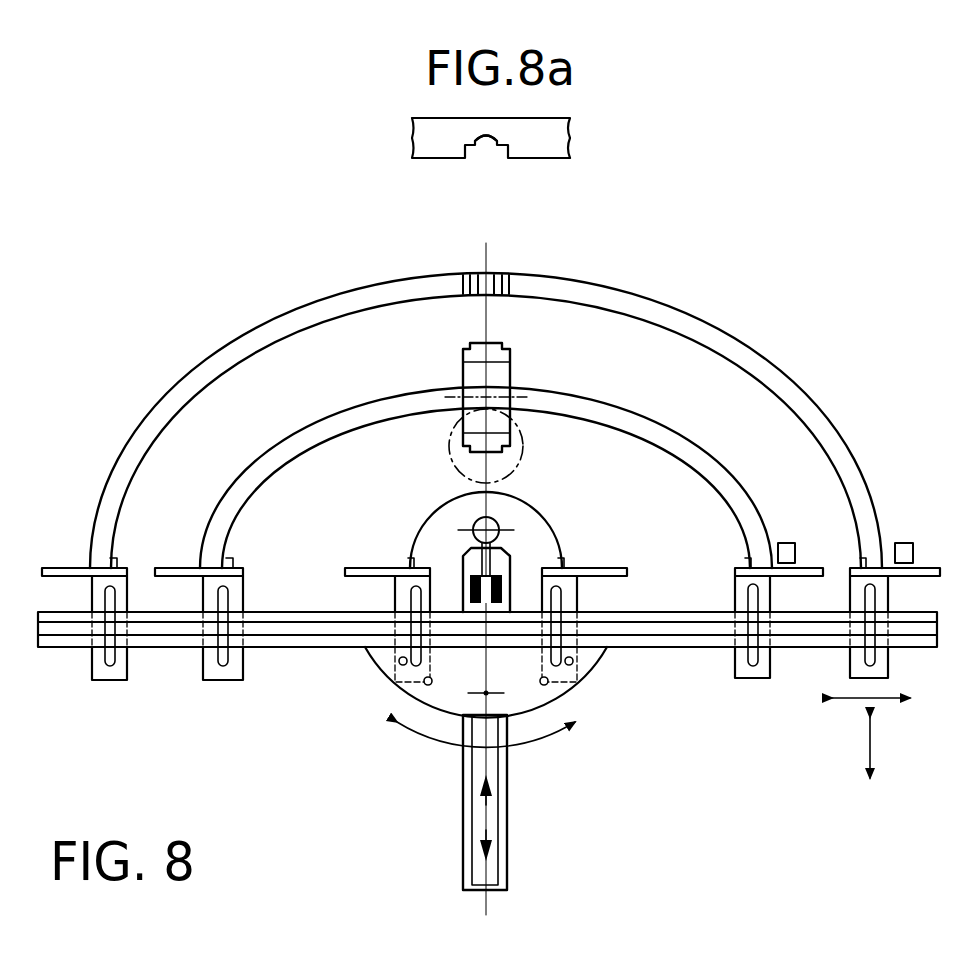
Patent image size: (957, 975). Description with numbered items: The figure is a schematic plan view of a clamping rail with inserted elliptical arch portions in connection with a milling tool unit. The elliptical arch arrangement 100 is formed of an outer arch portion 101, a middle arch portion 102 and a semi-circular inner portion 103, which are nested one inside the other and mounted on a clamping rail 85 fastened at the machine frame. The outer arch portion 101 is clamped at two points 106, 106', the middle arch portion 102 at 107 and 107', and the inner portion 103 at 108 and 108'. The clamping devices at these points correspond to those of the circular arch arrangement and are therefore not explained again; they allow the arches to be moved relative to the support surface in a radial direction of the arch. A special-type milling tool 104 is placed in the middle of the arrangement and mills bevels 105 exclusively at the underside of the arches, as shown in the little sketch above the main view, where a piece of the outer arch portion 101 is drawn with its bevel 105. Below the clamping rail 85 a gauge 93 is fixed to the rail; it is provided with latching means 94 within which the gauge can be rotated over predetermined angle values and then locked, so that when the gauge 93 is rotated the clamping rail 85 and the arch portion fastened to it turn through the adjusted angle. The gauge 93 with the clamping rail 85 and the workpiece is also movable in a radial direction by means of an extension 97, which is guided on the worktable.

In FIG. 8, the clamping rail 85 is at (163, 630).
In FIG. 8, the gauge 93 is at (517, 688).
In FIG. 8, the latching means 94 is at (424, 683).
In FIG. 8, the extension 97 is at (468, 802).
In FIG. 8, the elliptical arch arrangement 100 is at (726, 305).
In FIG. 8a, the outer arch portion 101 is at (572, 138).
In FIG. 8, the outer arch portion 101 is at (755, 350).
In FIG. 8, the middle arch portion 102 is at (668, 447).
In FIG. 8, the semi-circular inner portion 103 is at (518, 528).
In FIG. 8, the special-type milling tool 104 is at (503, 375).
In FIG. 8a, the bevels 105 is at (486, 150).
In FIG. 8, the bevels 105 is at (490, 268).
In FIG. 8, the clamping point of outer arch portion 106 is at (892, 619).
In FIG. 8, the clamping point of outer arch portion 106' is at (84, 584).
In FIG. 8, the clamping point of middle arch portion 107 is at (784, 569).
In FIG. 8, the clamping point of middle arch portion 107' is at (197, 584).
In FIG. 8, the clamping point of inner portion 108 is at (604, 589).
In FIG. 8, the clamping point of inner portion 108' is at (385, 576).